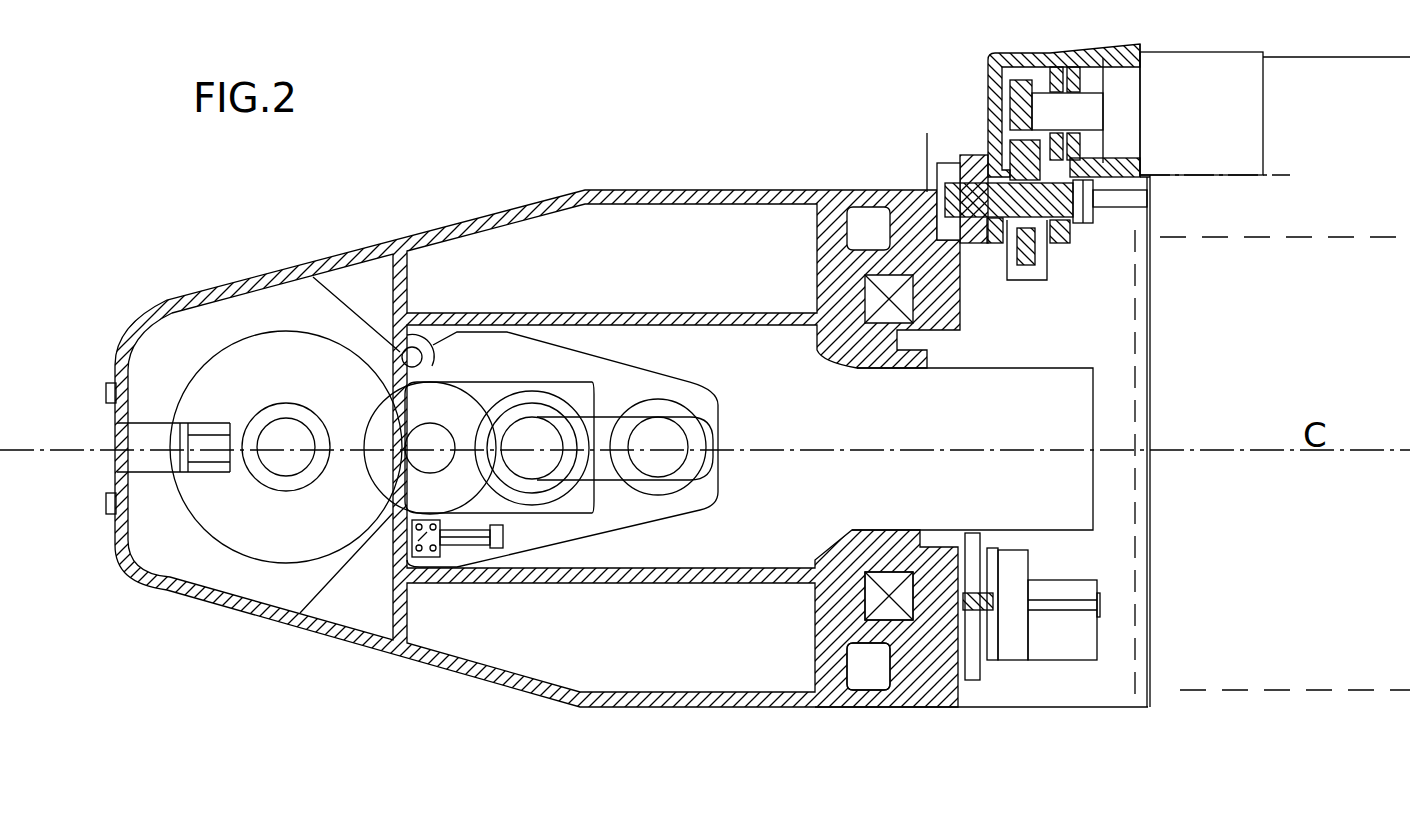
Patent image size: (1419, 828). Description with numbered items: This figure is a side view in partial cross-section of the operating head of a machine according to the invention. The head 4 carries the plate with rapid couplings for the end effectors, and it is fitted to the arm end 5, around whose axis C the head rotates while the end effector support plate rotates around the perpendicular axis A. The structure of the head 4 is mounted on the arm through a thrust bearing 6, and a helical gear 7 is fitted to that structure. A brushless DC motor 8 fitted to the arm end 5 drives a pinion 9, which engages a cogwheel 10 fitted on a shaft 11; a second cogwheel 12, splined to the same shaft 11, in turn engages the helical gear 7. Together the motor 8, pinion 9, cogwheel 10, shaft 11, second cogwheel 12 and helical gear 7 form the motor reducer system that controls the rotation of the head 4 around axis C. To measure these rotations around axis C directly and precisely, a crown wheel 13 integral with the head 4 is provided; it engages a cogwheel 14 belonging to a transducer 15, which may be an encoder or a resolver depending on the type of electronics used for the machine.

The head 4 is at (538, 170).
The arm end 5 is at (1192, 523).
The thrust bearing 6 is at (897, 577).
The helical gear 7 is at (908, 693).
The brushless DC motor 8 is at (1217, 140).
The pinion 9 is at (1020, 112).
The cogwheel 10 is at (1040, 272).
The shaft 11 is at (1070, 232).
The second cogwheel 12 is at (940, 163).
The crown wheel 13 is at (960, 530).
The cogwheel 14 is at (997, 552).
The transducer 15 is at (1097, 618).